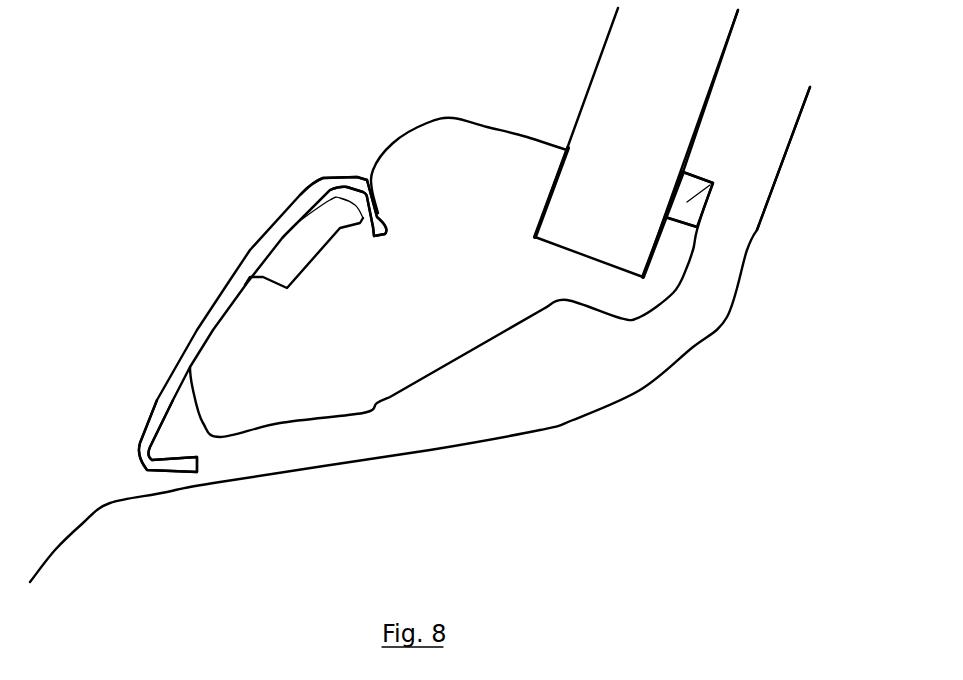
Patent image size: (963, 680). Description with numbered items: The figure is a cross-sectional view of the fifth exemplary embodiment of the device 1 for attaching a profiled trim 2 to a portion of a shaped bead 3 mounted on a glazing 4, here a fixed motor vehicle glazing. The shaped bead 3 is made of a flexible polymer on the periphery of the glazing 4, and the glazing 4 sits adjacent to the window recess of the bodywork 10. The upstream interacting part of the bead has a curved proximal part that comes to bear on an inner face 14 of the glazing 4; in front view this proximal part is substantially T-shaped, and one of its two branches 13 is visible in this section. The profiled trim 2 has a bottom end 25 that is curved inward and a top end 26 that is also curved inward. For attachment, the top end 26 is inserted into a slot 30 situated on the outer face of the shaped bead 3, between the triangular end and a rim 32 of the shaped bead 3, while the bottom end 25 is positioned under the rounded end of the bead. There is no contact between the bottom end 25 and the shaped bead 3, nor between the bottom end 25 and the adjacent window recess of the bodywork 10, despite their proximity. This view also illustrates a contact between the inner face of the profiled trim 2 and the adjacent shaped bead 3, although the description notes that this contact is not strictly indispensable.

The device 1 is at (239, 87).
The profiled trim 2 is at (227, 277).
The shaped bead 3 is at (563, 280).
The glazing 4 is at (687, 38).
The bodywork 10 is at (797, 132).
The branch 13 is at (713, 183).
The inner face 14 is at (712, 87).
The bottom end 25 is at (147, 474).
The top end 26 is at (342, 178).
The slot 30 is at (283, 238).
The rim 32 is at (420, 153).